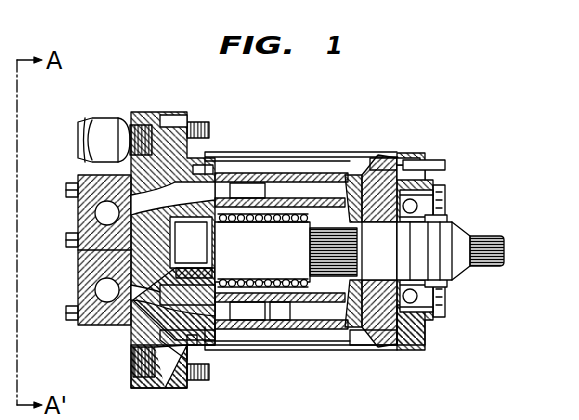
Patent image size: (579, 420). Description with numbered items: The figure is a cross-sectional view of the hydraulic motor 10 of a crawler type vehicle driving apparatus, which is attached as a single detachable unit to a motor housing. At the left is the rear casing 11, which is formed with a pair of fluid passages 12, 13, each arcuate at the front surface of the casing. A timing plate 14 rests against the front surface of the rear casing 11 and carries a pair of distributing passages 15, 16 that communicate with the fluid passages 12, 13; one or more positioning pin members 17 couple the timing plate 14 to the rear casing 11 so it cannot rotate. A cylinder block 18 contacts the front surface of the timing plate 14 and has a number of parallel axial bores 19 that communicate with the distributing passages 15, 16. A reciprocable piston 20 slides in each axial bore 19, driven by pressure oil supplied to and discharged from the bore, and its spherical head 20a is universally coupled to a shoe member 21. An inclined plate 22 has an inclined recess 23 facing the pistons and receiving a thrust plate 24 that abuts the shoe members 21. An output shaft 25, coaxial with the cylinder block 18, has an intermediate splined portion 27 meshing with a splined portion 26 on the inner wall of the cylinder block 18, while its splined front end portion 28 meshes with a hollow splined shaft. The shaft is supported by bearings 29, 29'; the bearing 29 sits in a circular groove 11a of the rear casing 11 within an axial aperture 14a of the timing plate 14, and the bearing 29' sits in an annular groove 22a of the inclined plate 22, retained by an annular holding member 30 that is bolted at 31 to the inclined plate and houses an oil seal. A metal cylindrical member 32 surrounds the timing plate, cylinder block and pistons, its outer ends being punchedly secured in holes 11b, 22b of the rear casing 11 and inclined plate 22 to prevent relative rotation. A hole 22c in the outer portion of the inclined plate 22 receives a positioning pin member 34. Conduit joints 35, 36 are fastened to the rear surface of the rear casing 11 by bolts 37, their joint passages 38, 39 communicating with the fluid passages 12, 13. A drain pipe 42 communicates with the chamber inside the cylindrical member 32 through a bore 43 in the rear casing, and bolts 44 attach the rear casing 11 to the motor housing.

The hydraulic motor 10 is at (302, 151).
The rear casing 11 is at (133, 383).
The circular groove 11a is at (183, 273).
The holes 11b is at (205, 337).
The fluid passage 12 is at (118, 185).
The fluid passage 13 is at (145, 292).
The timing plate 14 is at (215, 340).
The axial aperture 14a is at (208, 283).
The distributing passage 15 is at (258, 175).
The distributing passage 16 is at (280, 325).
The positioning pin member 17 is at (225, 185).
The cylinder block 18 is at (297, 325).
The axial bore 19 is at (308, 152).
The reciprocable piston 20 is at (320, 185).
The spherical head 20a is at (356, 177).
The shoe member 21 is at (395, 166).
The inclined plate 22 is at (432, 345).
The annular groove 22a is at (405, 305).
The holes 22b is at (373, 158).
The hole 22c is at (420, 159).
The inclined recess 23 is at (360, 350).
The thrust plate 24 is at (379, 251).
The output shaft 25 is at (456, 270).
The splined portion 26 is at (314, 250).
The intermediate splined portion 27 is at (312, 265).
The front end portion 28 is at (502, 248).
The bearing 29 is at (191, 242).
The bearing 29' is at (463, 275).
The annular holding member 30 is at (445, 200).
The bolt 31 is at (436, 183).
The metal cylindrical member 32 is at (321, 150).
The positioning pin member 34 is at (445, 164).
The conduit joint 35 is at (78, 225).
The conduit joint 36 is at (78, 293).
The bolt 37 is at (67, 315).
The joint passage 38 is at (78, 196).
The joint passage 39 is at (96, 286).
The drain pipe 42 is at (95, 135).
The bore 43 is at (198, 162).
The bolt 44 is at (196, 122).